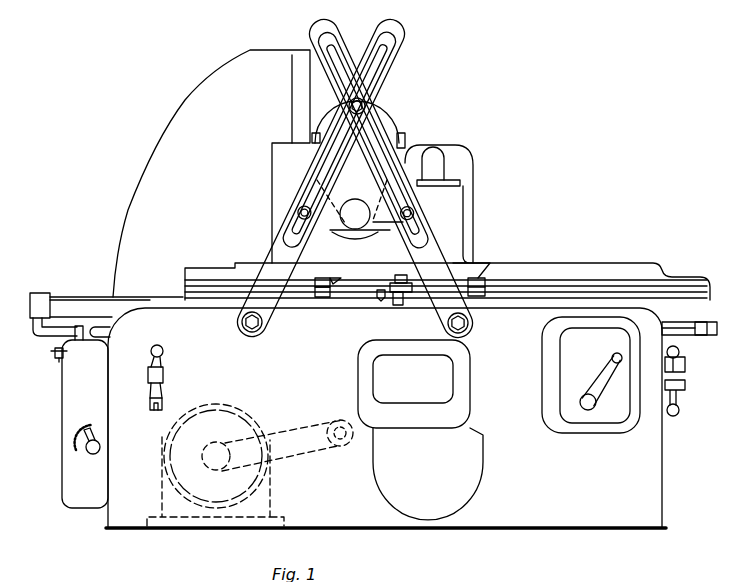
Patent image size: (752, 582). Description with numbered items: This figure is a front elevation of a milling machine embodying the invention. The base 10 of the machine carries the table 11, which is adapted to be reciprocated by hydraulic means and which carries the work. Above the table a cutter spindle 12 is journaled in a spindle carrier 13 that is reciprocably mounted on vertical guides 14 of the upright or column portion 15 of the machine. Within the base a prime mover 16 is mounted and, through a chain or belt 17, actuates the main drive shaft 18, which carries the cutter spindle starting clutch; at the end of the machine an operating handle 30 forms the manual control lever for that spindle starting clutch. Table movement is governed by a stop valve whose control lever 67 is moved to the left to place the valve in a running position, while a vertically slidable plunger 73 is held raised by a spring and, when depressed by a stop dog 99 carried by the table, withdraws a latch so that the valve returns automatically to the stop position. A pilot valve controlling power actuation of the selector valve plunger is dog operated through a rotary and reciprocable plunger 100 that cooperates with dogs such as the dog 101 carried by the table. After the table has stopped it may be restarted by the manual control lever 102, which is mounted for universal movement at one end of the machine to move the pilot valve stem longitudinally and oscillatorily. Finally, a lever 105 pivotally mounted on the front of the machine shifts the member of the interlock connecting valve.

The base 10 is at (652, 463).
The table 11 is at (630, 250).
The cutter spindle 12 is at (355, 216).
The spindle carrier 13 is at (406, 141).
The vertical guides 14 is at (298, 60).
The upright or column portion 15 is at (167, 138).
The prime mover 16 is at (263, 399).
The chain or belt 17 is at (296, 404).
The main drive shaft 18 is at (340, 424).
The operating handle 30 is at (685, 392).
The control lever 67 is at (593, 388).
The vertically slidable plunger 73 is at (378, 301).
The stop dog 99 is at (388, 305).
The rotary and reciprocable plunger 100 is at (394, 306).
The dog 101 is at (478, 282).
The manual control lever 102 is at (680, 352).
The lever 105 is at (163, 384).